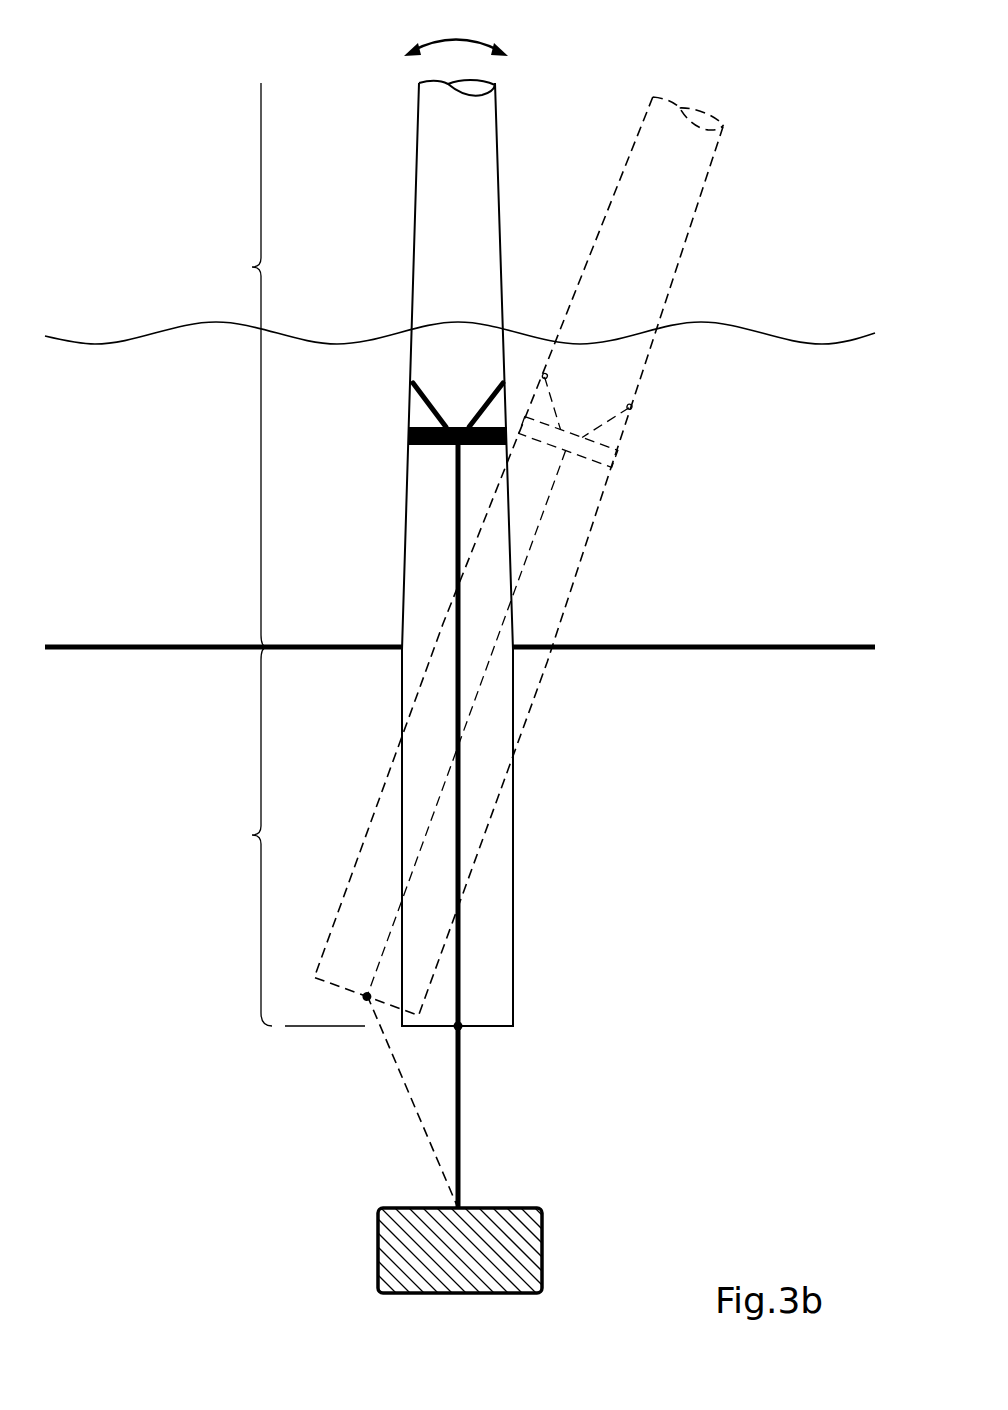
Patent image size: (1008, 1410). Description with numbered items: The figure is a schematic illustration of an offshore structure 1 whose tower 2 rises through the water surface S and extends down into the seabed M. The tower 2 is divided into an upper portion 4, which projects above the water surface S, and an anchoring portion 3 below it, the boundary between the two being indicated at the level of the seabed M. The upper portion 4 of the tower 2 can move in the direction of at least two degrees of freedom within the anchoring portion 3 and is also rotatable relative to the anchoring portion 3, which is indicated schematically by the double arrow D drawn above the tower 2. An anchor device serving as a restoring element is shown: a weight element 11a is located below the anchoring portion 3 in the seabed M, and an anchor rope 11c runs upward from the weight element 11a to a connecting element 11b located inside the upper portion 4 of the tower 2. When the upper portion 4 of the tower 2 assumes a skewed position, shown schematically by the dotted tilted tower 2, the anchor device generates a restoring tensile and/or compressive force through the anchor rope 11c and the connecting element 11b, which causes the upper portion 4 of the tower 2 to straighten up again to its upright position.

The offshore structure 1 is at (597, 88).
The tower 2 is at (480, 158).
The anchoring portion 3 is at (297, 836).
The upper portion 4 is at (248, 365).
The weight element 11a is at (525, 1237).
The connecting element 11b is at (403, 408).
The anchor rope 11c is at (460, 1107).
The water surface S is at (157, 332).
The seabed M is at (733, 644).
The double arrow D is at (456, 35).